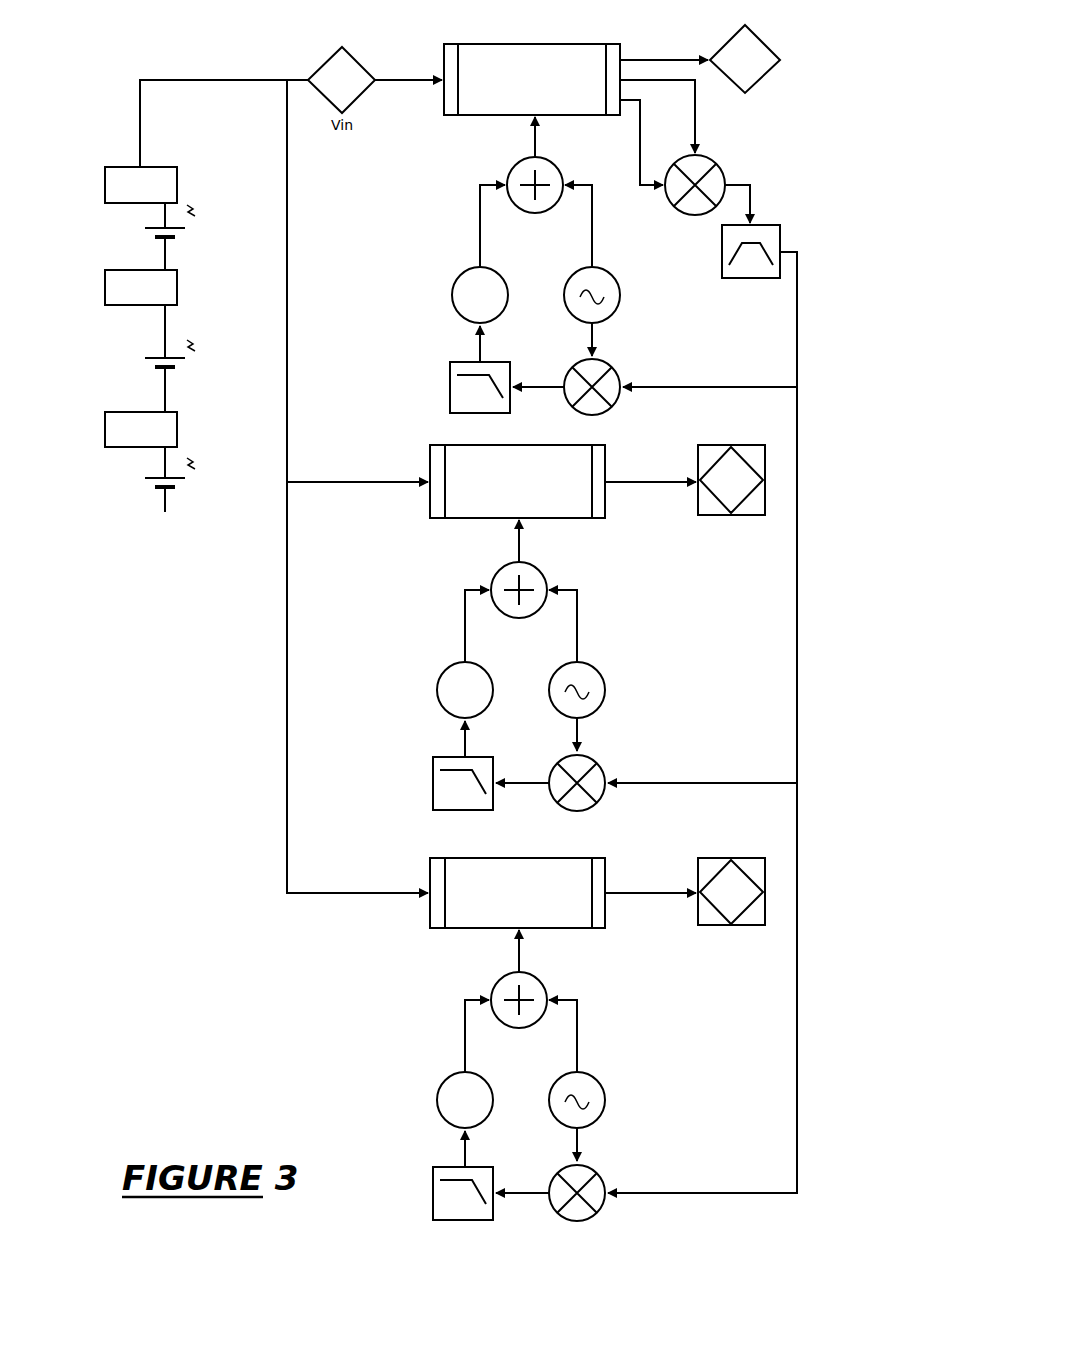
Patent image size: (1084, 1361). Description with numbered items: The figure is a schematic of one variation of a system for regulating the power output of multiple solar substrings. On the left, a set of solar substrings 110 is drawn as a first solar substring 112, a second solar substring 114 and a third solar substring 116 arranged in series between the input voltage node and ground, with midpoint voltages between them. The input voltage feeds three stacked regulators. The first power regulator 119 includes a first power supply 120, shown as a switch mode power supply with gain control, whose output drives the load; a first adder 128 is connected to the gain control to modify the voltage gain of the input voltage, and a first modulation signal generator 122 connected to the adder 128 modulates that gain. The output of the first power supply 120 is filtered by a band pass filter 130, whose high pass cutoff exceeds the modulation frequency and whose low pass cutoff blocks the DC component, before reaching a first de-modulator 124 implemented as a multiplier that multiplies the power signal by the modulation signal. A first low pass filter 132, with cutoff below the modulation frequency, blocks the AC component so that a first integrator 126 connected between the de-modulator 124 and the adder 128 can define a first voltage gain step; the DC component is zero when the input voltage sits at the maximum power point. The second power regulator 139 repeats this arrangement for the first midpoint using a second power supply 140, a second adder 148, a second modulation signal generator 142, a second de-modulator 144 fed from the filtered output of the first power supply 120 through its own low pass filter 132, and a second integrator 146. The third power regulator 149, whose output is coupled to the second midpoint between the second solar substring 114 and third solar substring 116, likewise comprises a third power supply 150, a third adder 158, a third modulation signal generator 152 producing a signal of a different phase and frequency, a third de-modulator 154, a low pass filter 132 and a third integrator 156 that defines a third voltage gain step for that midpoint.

The set of solar substrings 110 is at (126, 237).
The first solar substring 112 is at (186, 236).
The second solar substring 114 is at (186, 366).
The third solar substring 116 is at (186, 486).
The first power regulator 119 is at (460, 190).
The first power supply 120 is at (444, 52).
The first modulation signal generator 122 is at (606, 318).
The first de-modulator 124 is at (612, 410).
The first integrator 126 is at (451, 292).
The first adder 128 is at (506, 172).
The band pass filter 130 is at (770, 280).
The first low pass filter 132 is at (450, 404).
The second power regulator 139 is at (424, 575).
The second power supply 140 is at (607, 509).
The second modulation signal generator 142 is at (595, 714).
The second de-modulator 144 is at (600, 805).
The second integrator 146 is at (437, 687).
The second adder 148 is at (540, 575).
The third power regulator 149 is at (446, 972).
The third power supply 150 is at (607, 919).
The third modulation signal generator 152 is at (595, 1124).
The third de-modulator 154 is at (600, 1213).
The third integrator 156 is at (440, 1085).
The third adder 158 is at (540, 985).